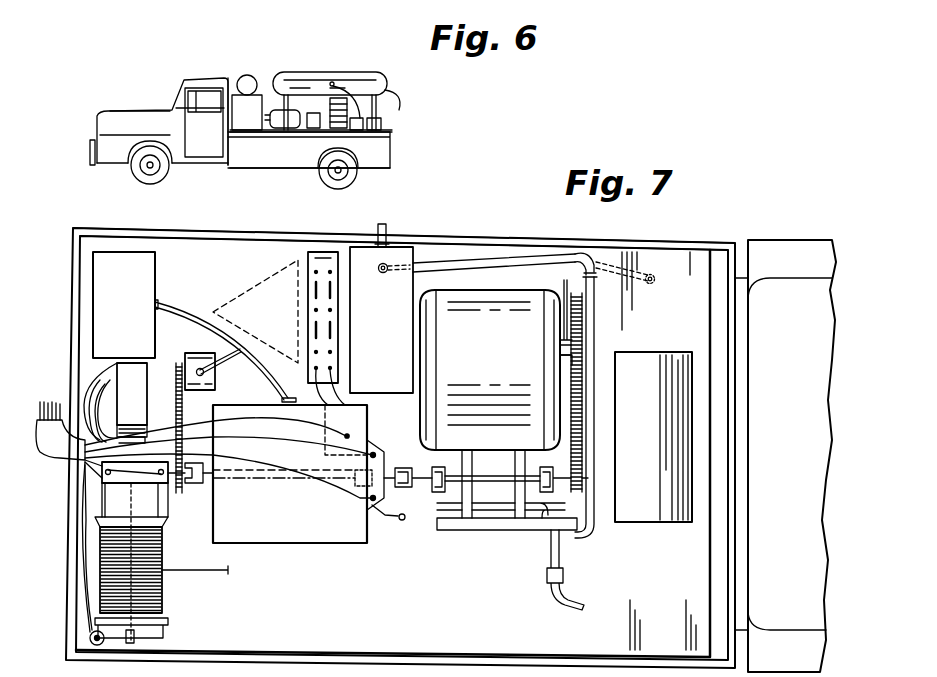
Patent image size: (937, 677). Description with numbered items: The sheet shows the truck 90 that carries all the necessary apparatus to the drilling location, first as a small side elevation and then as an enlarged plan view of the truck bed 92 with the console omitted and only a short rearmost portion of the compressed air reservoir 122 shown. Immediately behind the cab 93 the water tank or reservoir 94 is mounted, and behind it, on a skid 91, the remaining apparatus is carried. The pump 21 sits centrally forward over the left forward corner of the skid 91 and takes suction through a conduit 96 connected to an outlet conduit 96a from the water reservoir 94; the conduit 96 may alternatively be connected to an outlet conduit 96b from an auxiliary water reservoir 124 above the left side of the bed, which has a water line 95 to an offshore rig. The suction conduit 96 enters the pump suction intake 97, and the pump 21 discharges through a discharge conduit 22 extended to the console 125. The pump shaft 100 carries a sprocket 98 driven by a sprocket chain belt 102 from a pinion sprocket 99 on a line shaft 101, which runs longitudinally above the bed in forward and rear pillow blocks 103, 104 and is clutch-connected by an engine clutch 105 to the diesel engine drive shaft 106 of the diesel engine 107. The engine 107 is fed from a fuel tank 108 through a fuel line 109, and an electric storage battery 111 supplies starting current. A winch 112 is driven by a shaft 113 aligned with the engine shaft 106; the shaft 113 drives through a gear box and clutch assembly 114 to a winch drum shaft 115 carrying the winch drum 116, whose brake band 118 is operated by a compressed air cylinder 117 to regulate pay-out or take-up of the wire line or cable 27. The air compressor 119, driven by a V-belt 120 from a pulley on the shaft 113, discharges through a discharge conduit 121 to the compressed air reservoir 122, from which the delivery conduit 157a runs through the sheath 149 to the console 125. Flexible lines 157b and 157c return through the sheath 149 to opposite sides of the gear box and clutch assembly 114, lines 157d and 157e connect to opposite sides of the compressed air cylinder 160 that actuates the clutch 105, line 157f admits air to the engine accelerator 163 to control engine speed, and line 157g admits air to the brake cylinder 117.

In FIG. 6, the truck 90 is at (97, 113).
In FIG. 7, the truck 90 is at (835, 258).
In FIG. 6, the cab 93 is at (212, 78).
In FIG. 7, the cab 93 is at (790, 512).
In FIG. 6, the water tank or reservoir 94 is at (251, 117).
In FIG. 7, the water tank or reservoir 94 is at (666, 580).
In FIG. 6, the compressed air reservoir 122 is at (364, 74).
In FIG. 7, the compressed air reservoir 122 is at (128, 372).
In FIG. 6, the console 125 is at (336, 106).
In FIG. 7, the console 125 is at (254, 285).
In FIG. 6, the fuel tank 108 is at (382, 121).
In FIG. 7, the fuel tank 108 is at (126, 279).
In FIG. 6, the skid 91 is at (395, 133).
In FIG. 7, the skid 91 is at (462, 243).
In FIG. 6, the truck bed 92 is at (390, 143).
In FIG. 7, the truck bed 92 is at (510, 250).
In FIG. 6, the pump 21 is at (264, 147).
In FIG. 7, the pump 21 is at (494, 352).
In FIG. 6, the diesel engine 107 is at (287, 128).
In FIG. 7, the diesel engine 107 is at (296, 529).
In FIG. 6, the electric storage battery 111 is at (327, 128).
In FIG. 7, the electric storage battery 111 is at (326, 252).
In FIG. 6, the air compressor 119 is at (357, 130).
In FIG. 7, the air compressor 119 is at (194, 353).
In FIG. 7, the water line or conduit 95 is at (387, 226).
In FIG. 7, the outlet conduit 96b is at (524, 254).
In FIG. 7, the outlet conduit 96a is at (593, 256).
In FIG. 7, the suction conduit 96 is at (592, 348).
In FIG. 7, the sprocket 98 is at (583, 310).
In FIG. 7, the pump shaft 100 is at (566, 290).
In FIG. 7, the sprocket chain belt 102 is at (572, 376).
In FIG. 7, the pinion sprocket 99 is at (584, 492).
In FIG. 7, the discharge outlet or conduit 22 is at (549, 598).
In FIG. 7, the pump suction intake 97 is at (498, 525).
In FIG. 7, the line shaft 101 is at (507, 480).
In FIG. 7, the forward pillow block 103 is at (546, 467).
In FIG. 7, the rear pillow block 104 is at (438, 467).
In FIG. 7, the engine clutch 105 is at (401, 467).
In FIG. 7, the diesel engine drive shaft 106 is at (258, 482).
In FIG. 7, the fuel line 109 is at (192, 303).
In FIG. 7, the winch 112 is at (172, 530).
In FIG. 7, the winch shaft 113 is at (182, 486).
In FIG. 7, the gear box and clutch assembly 114 is at (165, 492).
In FIG. 7, the winch drum shaft 115 is at (163, 505).
In FIG. 7, the winch drum 116 is at (162, 586).
In FIG. 7, the compressed air cylinder 117 is at (88, 639).
In FIG. 7, the brake band 118 is at (170, 628).
In FIG. 7, the V-belt 120 is at (183, 425).
In FIG. 7, the discharge conduit 121 is at (228, 360).
In FIG. 7, the auxiliary water reservoir 124 is at (389, 330).
In FIG. 7, the wire line or cable 27 is at (229, 566).
In FIG. 7, the sheath 149 is at (58, 460).
In FIG. 7, the delivery conduit 157a is at (88, 398).
In FIG. 7, the flexible line 157b is at (155, 495).
In FIG. 7, the flexible line 157c is at (145, 480).
In FIG. 7, the flexible line 157d is at (310, 446).
In FIG. 7, the flexible line 157e is at (268, 470).
In FIG. 7, the compressed air conduit or line 157f is at (268, 423).
In FIG. 7, the compressed air conduit or line 157g is at (84, 610).
In FIG. 7, the compressed air cylinder 160 is at (378, 448).
In FIG. 7, the engine accelerator 163 is at (365, 424).